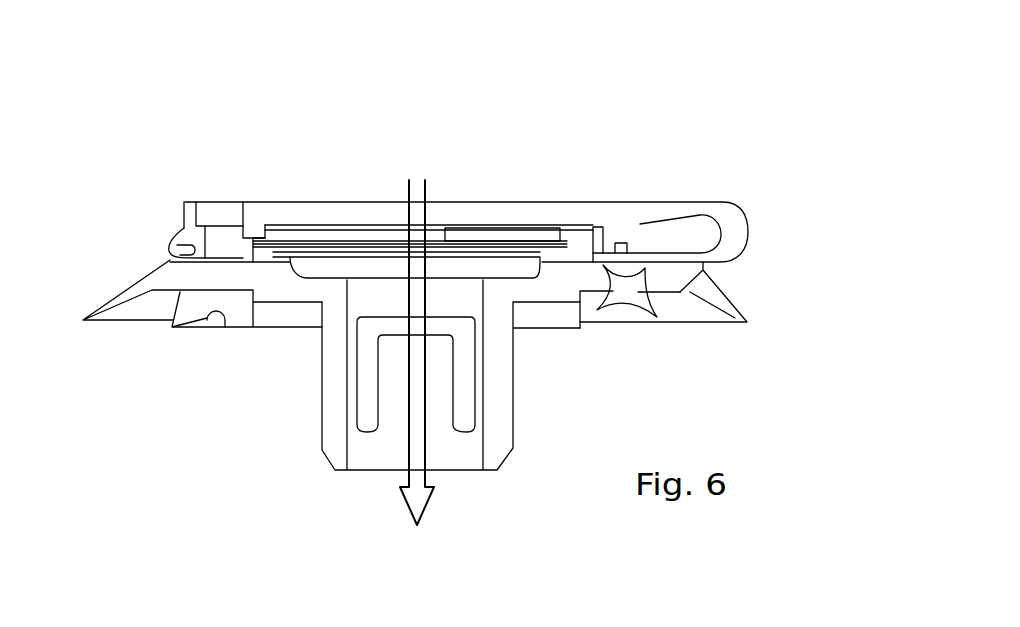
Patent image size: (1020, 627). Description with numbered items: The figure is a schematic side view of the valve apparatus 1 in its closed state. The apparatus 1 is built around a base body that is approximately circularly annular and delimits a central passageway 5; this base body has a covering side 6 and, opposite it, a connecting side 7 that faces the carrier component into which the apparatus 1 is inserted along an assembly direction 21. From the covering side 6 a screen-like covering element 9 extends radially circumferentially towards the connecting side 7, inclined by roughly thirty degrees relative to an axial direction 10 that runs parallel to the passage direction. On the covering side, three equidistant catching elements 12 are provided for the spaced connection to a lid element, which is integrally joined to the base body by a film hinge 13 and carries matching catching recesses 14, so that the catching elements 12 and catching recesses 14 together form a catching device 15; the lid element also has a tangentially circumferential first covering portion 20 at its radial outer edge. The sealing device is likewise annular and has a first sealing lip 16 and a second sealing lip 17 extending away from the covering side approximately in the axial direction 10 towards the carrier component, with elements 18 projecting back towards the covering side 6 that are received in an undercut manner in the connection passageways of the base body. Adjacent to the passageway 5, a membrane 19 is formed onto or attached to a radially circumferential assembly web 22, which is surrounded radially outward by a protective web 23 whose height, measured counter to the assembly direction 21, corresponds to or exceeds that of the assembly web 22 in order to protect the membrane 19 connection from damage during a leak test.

The apparatus 1 is at (118, 82).
The passageway 5 is at (388, 388).
The covering side 6 is at (305, 178).
The connecting side 7 is at (257, 362).
The covering element 9 is at (728, 311).
The axial direction 10 is at (407, 479).
The catching elements 12 is at (222, 228).
The film hinge 13 is at (737, 220).
The catching recesses 14 is at (200, 203).
The catching device 15 is at (214, 173).
The first sealing lip 16 is at (593, 310).
The second sealing lip 17 is at (642, 320).
The elements 18 is at (622, 273).
The membrane 19 is at (384, 242).
The first covering portion 20 is at (177, 238).
The assembly direction 21 is at (427, 457).
The assembly web 22 is at (272, 256).
The protective web 23 is at (585, 243).